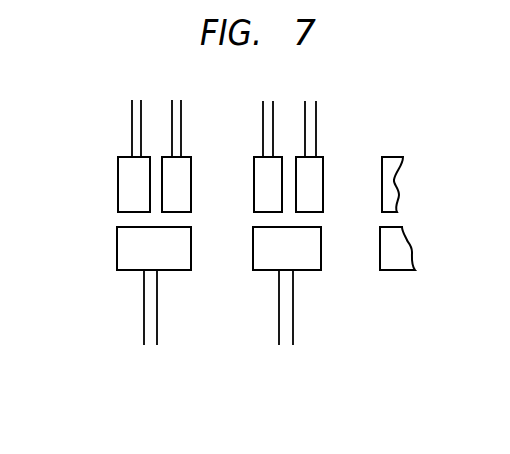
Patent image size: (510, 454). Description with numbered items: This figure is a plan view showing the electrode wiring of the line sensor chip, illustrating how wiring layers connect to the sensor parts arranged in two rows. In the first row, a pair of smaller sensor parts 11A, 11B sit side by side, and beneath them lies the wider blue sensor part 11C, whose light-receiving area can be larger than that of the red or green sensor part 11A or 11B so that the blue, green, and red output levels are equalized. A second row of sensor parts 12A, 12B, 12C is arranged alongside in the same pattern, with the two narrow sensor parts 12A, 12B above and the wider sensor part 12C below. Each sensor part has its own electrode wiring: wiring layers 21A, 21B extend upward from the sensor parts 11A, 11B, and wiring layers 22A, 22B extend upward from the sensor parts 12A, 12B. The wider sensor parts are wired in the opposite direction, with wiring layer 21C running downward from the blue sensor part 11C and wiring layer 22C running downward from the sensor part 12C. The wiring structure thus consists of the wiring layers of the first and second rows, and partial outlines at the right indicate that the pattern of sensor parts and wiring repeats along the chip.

The sensor part 11A is at (130, 192).
The sensor part 11B is at (180, 192).
The blue sensor part 11C is at (183, 248).
The wiring layer 21A is at (135, 113).
The wiring layer 21B is at (178, 115).
The wiring layer 21C is at (150, 323).
The sensor part 12A is at (263, 167).
The sensor part 12B is at (315, 168).
The sensor part 12C is at (312, 250).
The wiring layer 22A is at (268, 112).
The wiring layer 22B is at (309, 113).
The wiring layer 22C is at (287, 323).